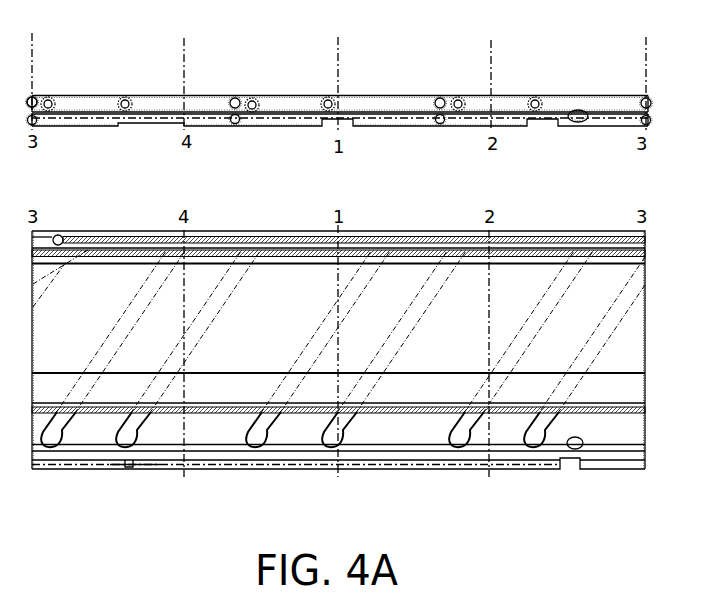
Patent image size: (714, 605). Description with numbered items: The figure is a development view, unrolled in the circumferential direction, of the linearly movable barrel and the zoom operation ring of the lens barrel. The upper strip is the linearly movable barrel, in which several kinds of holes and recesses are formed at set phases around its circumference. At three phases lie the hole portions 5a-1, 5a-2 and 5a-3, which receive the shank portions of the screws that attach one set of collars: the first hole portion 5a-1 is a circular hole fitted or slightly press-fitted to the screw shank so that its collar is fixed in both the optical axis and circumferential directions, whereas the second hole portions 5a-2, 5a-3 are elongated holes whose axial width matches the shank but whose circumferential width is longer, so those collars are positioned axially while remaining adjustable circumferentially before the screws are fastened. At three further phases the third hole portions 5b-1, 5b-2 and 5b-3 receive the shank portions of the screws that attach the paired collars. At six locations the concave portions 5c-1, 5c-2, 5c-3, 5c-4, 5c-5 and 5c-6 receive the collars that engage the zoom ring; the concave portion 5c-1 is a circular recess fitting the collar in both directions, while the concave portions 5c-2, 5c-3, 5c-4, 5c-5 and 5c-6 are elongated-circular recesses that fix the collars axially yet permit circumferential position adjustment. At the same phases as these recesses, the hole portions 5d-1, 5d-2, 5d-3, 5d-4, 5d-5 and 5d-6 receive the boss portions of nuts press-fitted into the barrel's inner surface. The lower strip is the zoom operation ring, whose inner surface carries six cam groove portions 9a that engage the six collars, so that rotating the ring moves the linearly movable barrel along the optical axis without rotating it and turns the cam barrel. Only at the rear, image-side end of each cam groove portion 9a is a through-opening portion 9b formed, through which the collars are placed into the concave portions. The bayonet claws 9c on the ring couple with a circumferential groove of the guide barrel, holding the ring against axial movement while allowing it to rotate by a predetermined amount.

The hole portion (first hole portion) 5a-1 is at (50, 122).
The hole portion (second hole portion) 5a-2 is at (238, 123).
The hole portion (second hole portion) 5a-3 is at (438, 123).
The hole portion (third hole portion) 5b-1 is at (40, 99).
The hole portion (third hole portion) 5b-2 is at (237, 98).
The hole portion (third hole portion) 5b-3 is at (447, 98).
The concave portion 5c-1 is at (336, 107).
The concave portion 5c-2 is at (463, 106).
The concave portion 5c-3 is at (541, 107).
The concave portion 5c-4 is at (57, 103).
The concave portion 5c-5 is at (132, 103).
The concave portion 5c-6 is at (259, 105).
The hole portion 5d-1 is at (336, 100).
The hole portion 5d-2 is at (461, 100).
The hole portion 5d-3 is at (538, 100).
The hole portion 5d-4 is at (52, 101).
The hole portion 5d-5 is at (128, 100).
The hole portion 5d-6 is at (256, 100).
The cam groove portion 9a is at (363, 385).
The through-opening portion 9b is at (333, 427).
The bayonet claw 9c is at (147, 463).